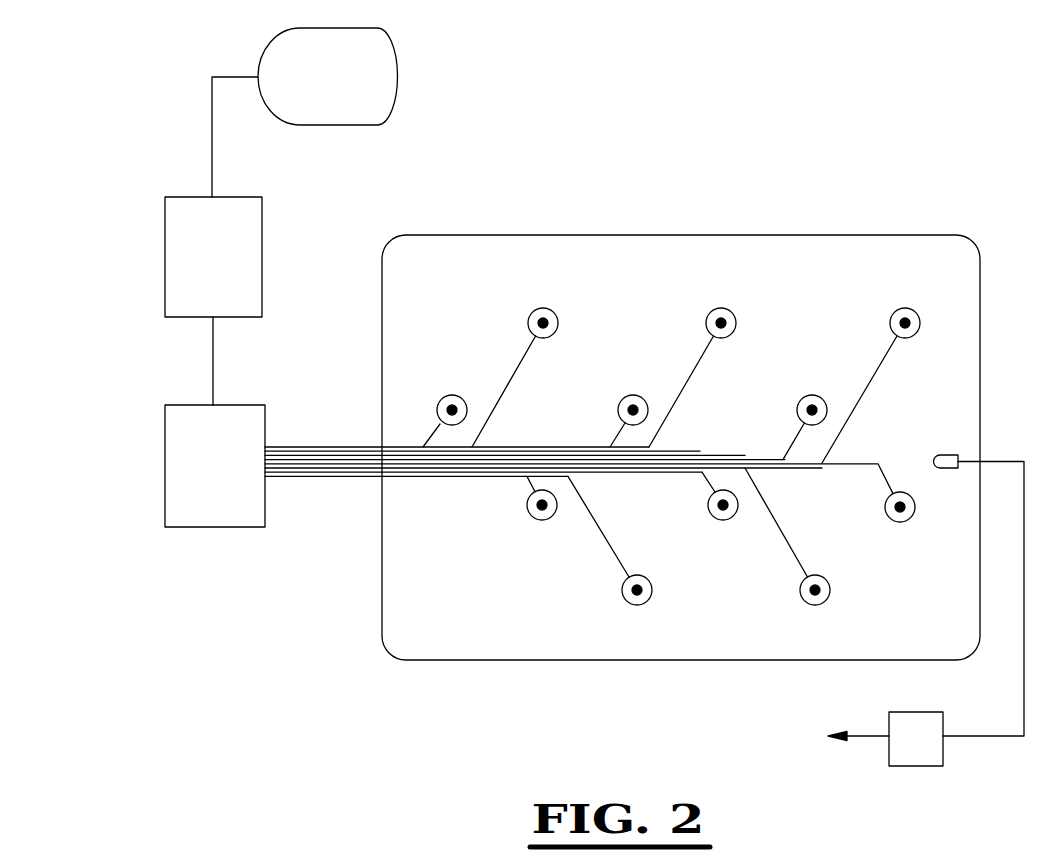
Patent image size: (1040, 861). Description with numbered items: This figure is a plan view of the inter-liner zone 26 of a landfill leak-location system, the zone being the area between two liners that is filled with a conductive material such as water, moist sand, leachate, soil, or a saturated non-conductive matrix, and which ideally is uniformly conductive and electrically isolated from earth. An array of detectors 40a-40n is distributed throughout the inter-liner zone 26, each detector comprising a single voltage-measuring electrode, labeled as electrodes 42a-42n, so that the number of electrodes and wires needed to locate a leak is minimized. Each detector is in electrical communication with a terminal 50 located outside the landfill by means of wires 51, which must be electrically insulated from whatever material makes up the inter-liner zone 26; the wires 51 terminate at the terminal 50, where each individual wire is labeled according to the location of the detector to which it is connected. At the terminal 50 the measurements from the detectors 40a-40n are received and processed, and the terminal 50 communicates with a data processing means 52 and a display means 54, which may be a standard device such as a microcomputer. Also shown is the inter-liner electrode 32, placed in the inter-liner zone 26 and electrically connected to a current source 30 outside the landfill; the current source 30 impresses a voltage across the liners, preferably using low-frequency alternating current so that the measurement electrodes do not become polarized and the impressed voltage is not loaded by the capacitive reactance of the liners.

The inter-liner zone 26 is at (420, 274).
The current source 30 is at (905, 766).
The inter-liner electrode 32 is at (942, 454).
The detectors 40a-40n is at (892, 315).
The electrodes 42a-42n is at (708, 509).
The terminal 50 is at (198, 482).
The wires 51 is at (320, 462).
The data processing means 52 is at (195, 276).
The display means 54 is at (397, 73).